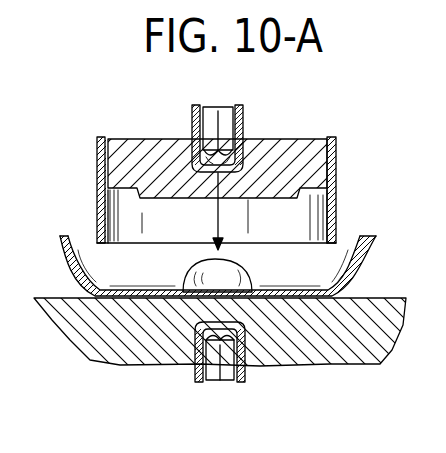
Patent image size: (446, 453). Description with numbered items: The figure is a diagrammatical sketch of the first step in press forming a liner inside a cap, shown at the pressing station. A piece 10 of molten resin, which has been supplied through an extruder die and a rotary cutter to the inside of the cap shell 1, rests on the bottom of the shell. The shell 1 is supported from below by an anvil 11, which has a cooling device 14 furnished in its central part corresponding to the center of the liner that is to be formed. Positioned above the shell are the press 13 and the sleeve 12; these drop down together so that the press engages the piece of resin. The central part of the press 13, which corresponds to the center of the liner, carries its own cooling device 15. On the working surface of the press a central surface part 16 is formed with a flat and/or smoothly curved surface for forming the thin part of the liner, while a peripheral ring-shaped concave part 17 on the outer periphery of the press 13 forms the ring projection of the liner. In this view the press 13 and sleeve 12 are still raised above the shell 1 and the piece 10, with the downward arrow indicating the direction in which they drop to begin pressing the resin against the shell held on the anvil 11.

The cap shell 1 is at (366, 256).
The piece of molten resin 10 is at (185, 272).
The anvil 11 is at (327, 358).
The sleeve 12 is at (337, 186).
The press 13 is at (304, 140).
The cooling device 14 is at (206, 382).
The cooling device 15 is at (246, 119).
The central surface part 16 is at (248, 199).
The peripheral ring-shaped concave part 17 is at (128, 204).